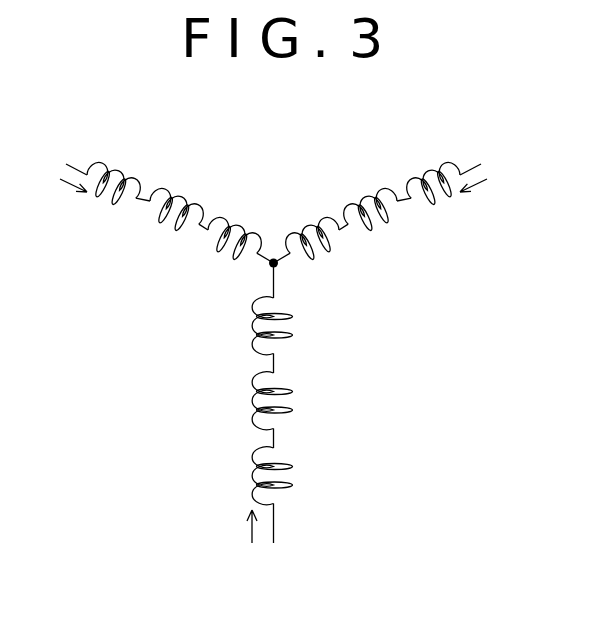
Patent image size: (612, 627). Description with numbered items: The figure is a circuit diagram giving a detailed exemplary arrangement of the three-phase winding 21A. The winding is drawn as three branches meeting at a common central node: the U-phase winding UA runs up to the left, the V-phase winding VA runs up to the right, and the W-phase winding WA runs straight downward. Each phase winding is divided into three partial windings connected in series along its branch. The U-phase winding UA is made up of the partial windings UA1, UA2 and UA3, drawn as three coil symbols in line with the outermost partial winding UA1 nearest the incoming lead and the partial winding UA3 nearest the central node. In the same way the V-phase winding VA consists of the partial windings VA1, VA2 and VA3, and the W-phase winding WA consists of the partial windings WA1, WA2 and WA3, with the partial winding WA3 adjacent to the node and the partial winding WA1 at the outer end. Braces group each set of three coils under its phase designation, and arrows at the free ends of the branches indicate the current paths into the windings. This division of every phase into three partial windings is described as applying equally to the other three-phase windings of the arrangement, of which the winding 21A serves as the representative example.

The three-phase winding 21A is at (303, 118).
The U-phase winding UA is at (266, 210).
The partial winding UA1 is at (113, 171).
The partial winding UA2 is at (176, 199).
The partial winding UA3 is at (235, 228).
The V-phase winding VA is at (455, 134).
The partial winding VA1 is at (435, 168).
The partial winding VA2 is at (372, 195).
The partial winding VA3 is at (314, 224).
The W-phase winding WA is at (345, 310).
The partial winding WA1 is at (299, 476).
The partial winding WA2 is at (299, 401).
The partial winding WA3 is at (299, 326).